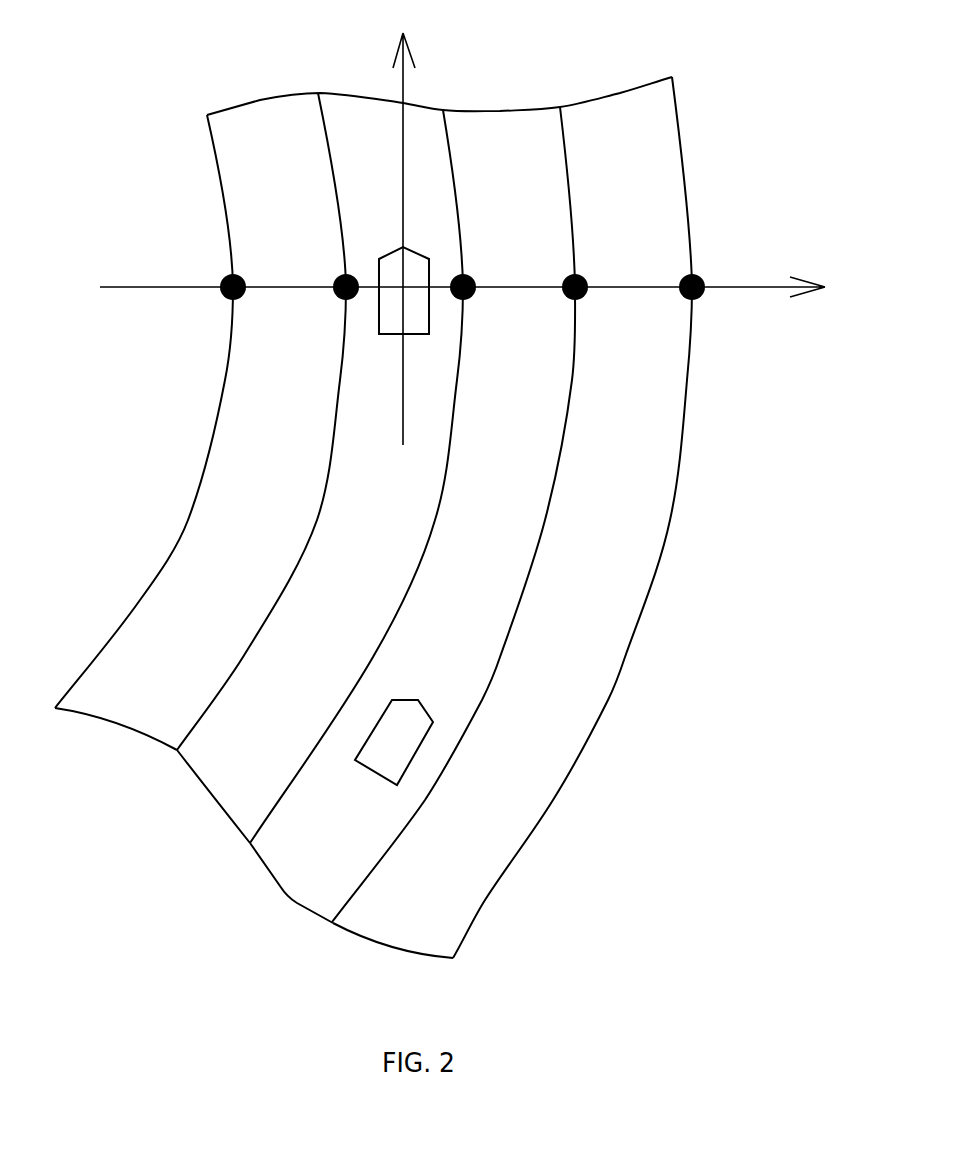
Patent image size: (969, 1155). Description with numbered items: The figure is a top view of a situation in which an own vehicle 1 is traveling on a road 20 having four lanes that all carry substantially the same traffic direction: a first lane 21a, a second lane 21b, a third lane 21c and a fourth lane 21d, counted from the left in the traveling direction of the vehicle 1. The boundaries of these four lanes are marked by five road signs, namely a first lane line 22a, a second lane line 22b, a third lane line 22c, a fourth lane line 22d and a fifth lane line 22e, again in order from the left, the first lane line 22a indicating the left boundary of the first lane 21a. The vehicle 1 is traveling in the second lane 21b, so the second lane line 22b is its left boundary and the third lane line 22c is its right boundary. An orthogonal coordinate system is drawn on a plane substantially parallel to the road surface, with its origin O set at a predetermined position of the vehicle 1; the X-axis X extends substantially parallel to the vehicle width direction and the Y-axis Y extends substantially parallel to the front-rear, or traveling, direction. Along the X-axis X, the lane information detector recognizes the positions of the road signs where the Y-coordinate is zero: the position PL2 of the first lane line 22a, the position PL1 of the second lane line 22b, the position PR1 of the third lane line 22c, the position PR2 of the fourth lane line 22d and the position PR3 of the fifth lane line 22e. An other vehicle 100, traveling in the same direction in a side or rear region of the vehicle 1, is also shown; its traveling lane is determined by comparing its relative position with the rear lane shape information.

The road 20 is at (750, 155).
The first lane line 22a is at (213, 149).
The second lane line 22b is at (327, 140).
The third lane line 22c is at (448, 150).
The fourth lane line 22d is at (568, 188).
The fifth lane line 22e is at (679, 140).
The first lane 21a is at (108, 722).
The second lane 21b is at (213, 799).
The third lane 21c is at (287, 897).
The fourth lane 21d is at (392, 947).
The vehicle 1 is at (393, 252).
The other vehicle 100 is at (428, 712).
The position PL1 is at (329, 301).
The position PL2 is at (214, 301).
The position PR1 is at (478, 301).
The position PR2 is at (593, 301).
The position PR3 is at (708, 303).
The origin O is at (417, 305).
The X-axis X is at (475, 291).
The Y-axis Y is at (404, 223).